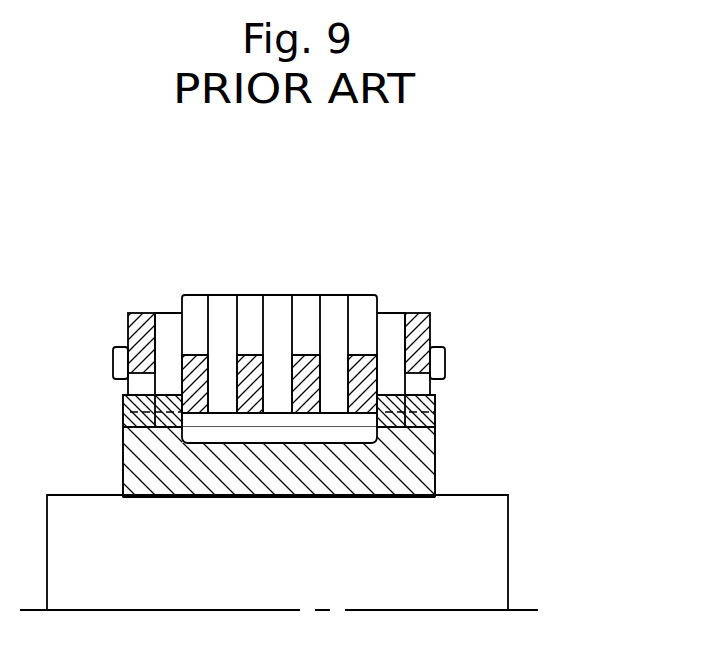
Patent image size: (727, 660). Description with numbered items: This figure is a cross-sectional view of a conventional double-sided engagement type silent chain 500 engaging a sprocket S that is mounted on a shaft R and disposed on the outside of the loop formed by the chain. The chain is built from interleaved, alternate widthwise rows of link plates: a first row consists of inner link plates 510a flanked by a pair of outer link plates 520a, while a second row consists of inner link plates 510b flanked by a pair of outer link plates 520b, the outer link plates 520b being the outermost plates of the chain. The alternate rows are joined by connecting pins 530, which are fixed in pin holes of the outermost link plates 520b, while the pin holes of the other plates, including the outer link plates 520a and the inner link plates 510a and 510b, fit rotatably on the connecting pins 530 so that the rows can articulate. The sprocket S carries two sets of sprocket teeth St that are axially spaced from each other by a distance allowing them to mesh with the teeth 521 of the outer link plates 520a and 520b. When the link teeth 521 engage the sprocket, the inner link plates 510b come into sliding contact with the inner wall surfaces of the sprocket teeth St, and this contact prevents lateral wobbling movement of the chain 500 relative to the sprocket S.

The double-sided engagement type silent chain 500 is at (338, 287).
The inner link plate 510a is at (167, 317).
The inner link plate 510b is at (140, 320).
The outer link plate 520a is at (393, 317).
The outer link plate 520b is at (415, 313).
The tooth 521 is at (167, 408).
The connecting pin 530 is at (445, 358).
The sprocket tooth St is at (435, 412).
The sprocket S is at (442, 460).
The shaft R is at (513, 550).